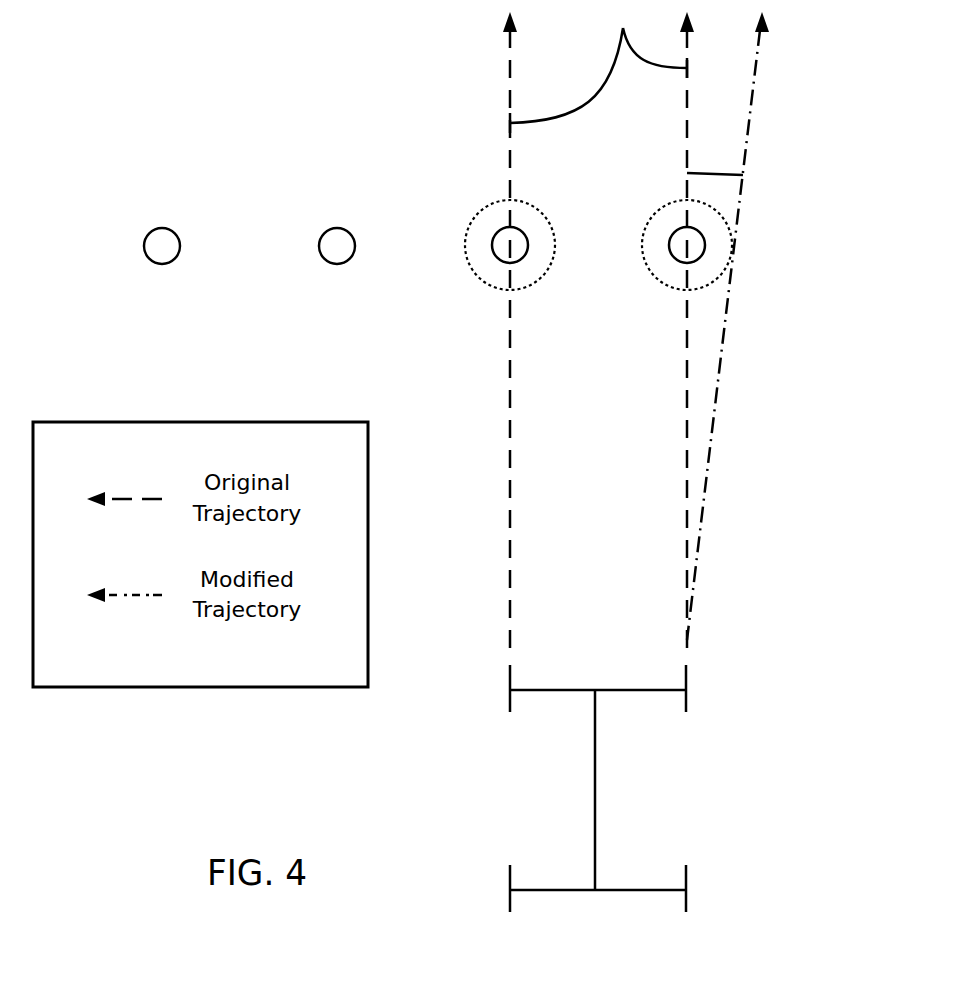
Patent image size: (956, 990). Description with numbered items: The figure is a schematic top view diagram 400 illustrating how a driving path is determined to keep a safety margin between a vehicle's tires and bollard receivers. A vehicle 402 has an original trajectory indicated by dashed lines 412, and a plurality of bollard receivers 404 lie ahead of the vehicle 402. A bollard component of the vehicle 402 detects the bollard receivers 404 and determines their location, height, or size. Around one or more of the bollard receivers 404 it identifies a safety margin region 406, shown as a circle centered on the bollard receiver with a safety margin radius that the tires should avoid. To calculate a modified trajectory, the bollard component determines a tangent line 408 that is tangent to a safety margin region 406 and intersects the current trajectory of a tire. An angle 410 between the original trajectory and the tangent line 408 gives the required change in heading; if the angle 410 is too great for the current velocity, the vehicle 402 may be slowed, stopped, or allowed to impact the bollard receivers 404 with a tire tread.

The schematic top view diagram 400 is at (162, 68).
The vehicle 402 is at (688, 877).
The bollard receivers 404 is at (337, 228).
The safety margin region 406 is at (478, 218).
The tangent line 408 is at (720, 372).
The angle 410 is at (717, 173).
The dashed lines 412 is at (598, 66).